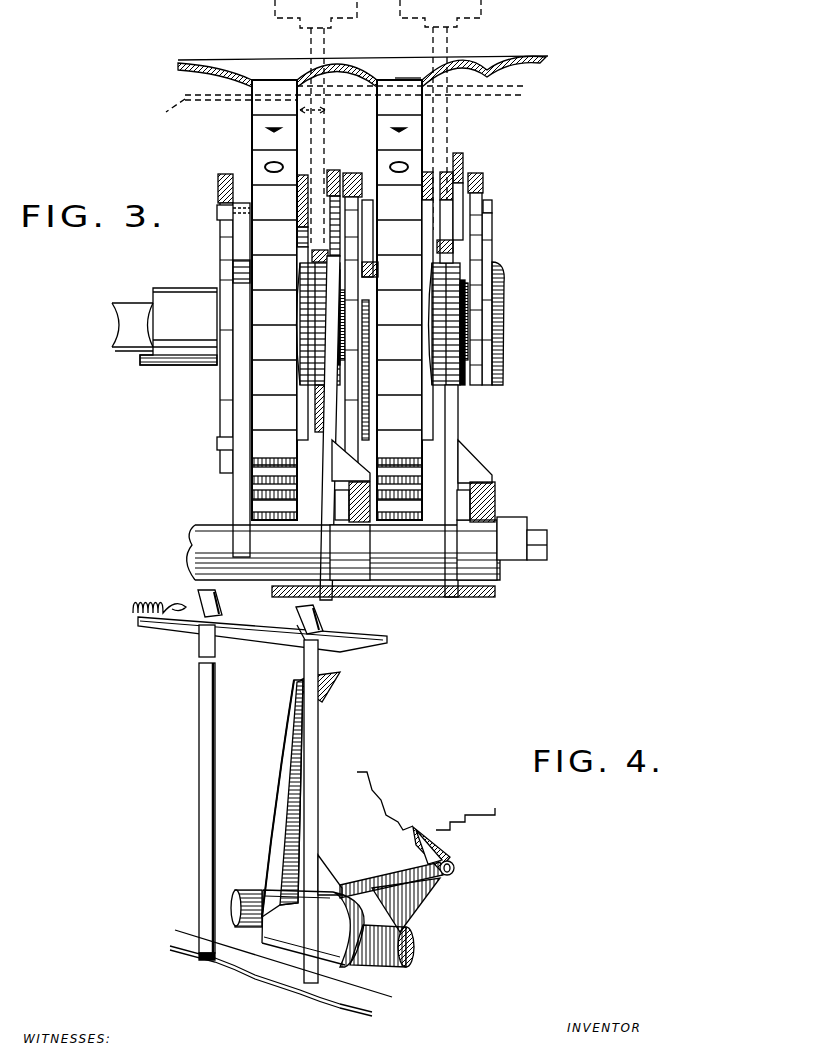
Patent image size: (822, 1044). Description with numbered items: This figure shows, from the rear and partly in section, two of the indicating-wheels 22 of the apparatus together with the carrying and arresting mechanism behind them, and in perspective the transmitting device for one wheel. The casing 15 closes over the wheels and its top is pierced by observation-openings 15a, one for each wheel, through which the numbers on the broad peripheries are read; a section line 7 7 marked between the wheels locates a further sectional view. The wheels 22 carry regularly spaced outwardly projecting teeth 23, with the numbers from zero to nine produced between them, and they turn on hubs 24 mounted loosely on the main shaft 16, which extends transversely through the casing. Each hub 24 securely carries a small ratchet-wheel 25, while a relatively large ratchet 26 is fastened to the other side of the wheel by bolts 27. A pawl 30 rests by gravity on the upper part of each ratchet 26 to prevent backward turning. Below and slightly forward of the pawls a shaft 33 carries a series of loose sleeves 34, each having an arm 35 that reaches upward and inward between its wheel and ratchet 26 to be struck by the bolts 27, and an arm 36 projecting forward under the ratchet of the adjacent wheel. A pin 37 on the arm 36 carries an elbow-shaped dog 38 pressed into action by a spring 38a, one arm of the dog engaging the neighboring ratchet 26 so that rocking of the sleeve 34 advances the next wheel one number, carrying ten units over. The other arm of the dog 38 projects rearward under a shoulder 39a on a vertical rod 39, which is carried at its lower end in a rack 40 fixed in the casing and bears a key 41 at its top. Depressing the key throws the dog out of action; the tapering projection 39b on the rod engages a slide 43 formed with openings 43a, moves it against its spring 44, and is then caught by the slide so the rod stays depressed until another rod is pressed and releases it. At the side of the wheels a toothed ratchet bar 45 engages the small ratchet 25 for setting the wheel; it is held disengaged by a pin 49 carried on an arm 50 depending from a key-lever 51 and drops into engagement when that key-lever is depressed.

In FIG. 3, the space between number wheels 7 is at (332, 110).
In FIG. 3, the casing 15 is at (517, 60).
In FIG. 3, the observation-openings 15a is at (400, 77).
In FIG. 3, the main shaft 16 is at (125, 350).
In FIG. 3, the indicating-wheels 22 is at (384, 200).
In FIG. 3, the teeth 23 is at (253, 468).
In FIG. 3, the hubs 24 is at (383, 306).
In FIG. 3, the small ratchet-wheel 25 is at (354, 319).
In FIG. 3, the large ratchet 26 is at (228, 403).
In FIG. 4, the large ratchet 26 is at (450, 837).
In FIG. 3, the bolts 27 is at (492, 208).
In FIG. 3, the pawl 30 is at (485, 182).
In FIG. 3, the shaft 33 is at (547, 540).
In FIG. 4, the shaft 33 is at (415, 960).
In FIG. 3, the sleeves 34 is at (513, 530).
In FIG. 4, the sleeves 34 is at (283, 927).
In FIG. 3, the arm 35 is at (247, 500).
In FIG. 4, the arm 35 is at (275, 788).
In FIG. 3, the arm 36 is at (380, 538).
In FIG. 4, the arm 36 is at (410, 898).
In FIG. 4, the pin 37 is at (455, 868).
In FIG. 4, the elbow-shaped dog 38 is at (455, 875).
In FIG. 4, the springs 38a is at (413, 910).
In FIG. 3, the rods 39 is at (482, 422).
In FIG. 4, the rods 39 is at (309, 803).
In FIG. 3, the shoulders 39a is at (477, 470).
In FIG. 4, the shoulders 39a is at (330, 880).
In FIG. 3, the tapering projection 39b is at (323, 620).
In FIG. 3, the rack 40 is at (487, 593).
In FIG. 4, the rack 40 is at (352, 997).
In FIG. 3, the keys 41 is at (482, 8).
In FIG. 3, the slide 43 is at (347, 660).
In FIG. 3, the openings 43a is at (297, 632).
In FIG. 3, the spring 44 is at (140, 600).
In FIG. 3, the ratchet bar 45 is at (455, 245).
In FIG. 3, the pins 49 is at (455, 254).
In FIG. 3, the arms 50 is at (462, 227).
In FIG. 3, the key-levers 51 is at (463, 160).